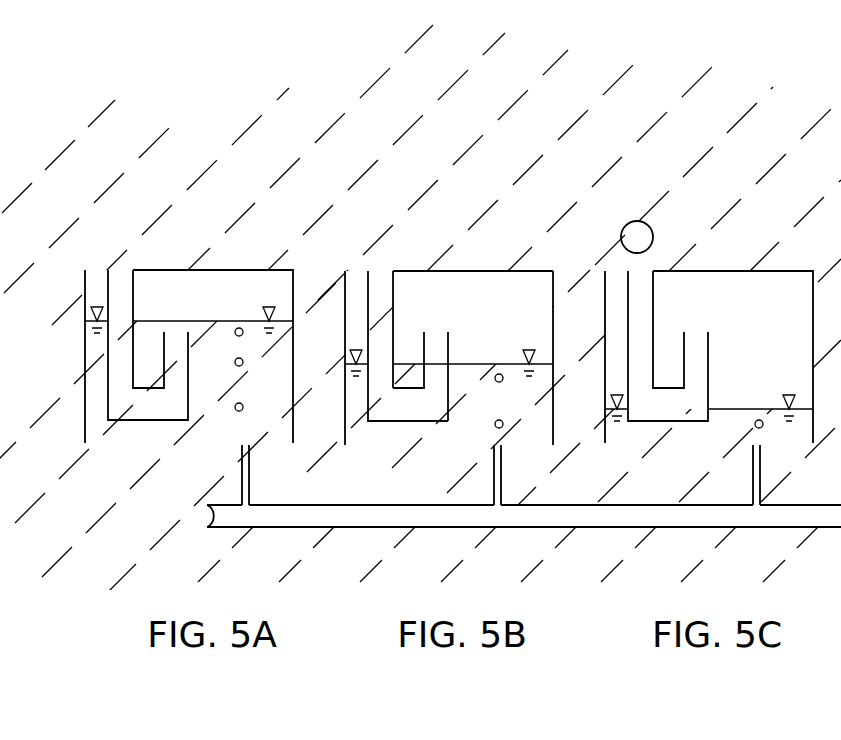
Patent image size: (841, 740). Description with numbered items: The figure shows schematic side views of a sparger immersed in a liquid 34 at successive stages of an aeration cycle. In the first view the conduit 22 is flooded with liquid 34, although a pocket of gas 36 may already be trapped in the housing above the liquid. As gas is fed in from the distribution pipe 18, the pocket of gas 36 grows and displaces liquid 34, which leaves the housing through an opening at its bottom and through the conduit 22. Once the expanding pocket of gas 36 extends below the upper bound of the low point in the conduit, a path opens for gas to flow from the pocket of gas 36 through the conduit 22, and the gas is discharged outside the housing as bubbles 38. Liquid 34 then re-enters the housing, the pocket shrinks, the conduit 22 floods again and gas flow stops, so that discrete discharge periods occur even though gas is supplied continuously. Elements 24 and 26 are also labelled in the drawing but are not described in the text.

In FIG. 5B, the distribution pipe 18 is at (565, 516).
In FIG. 5B, the conduit 22 is at (395, 297).
In FIG. 5B, the weir wall 24 is at (450, 332).
In FIG. 5B, the top cover wall 26 is at (395, 264).
In FIG. 5C, the liquid 34 is at (731, 168).
In FIG. 5A, the pocket of gas 36 is at (201, 306).
In FIG. 5C, the bubbles 38 is at (639, 221).